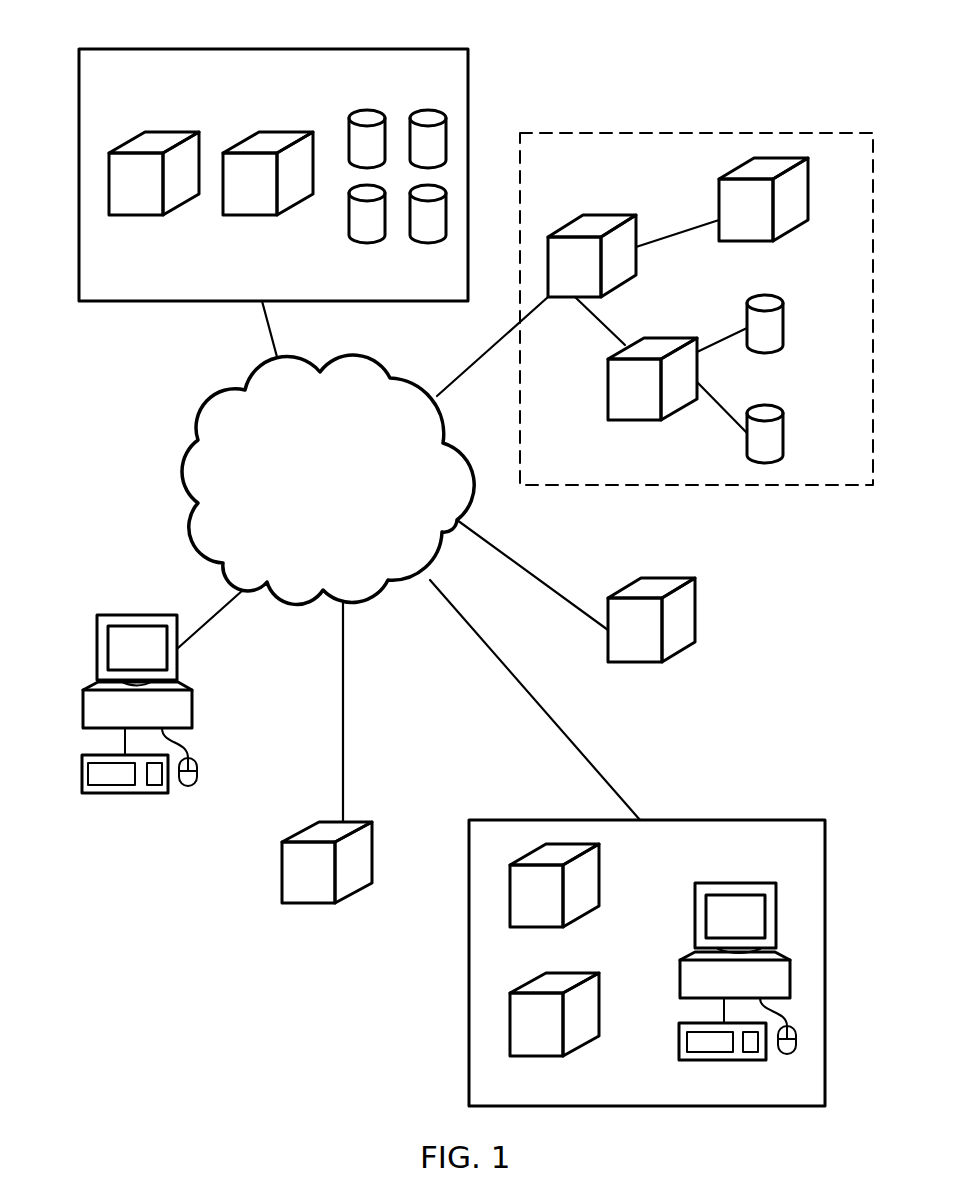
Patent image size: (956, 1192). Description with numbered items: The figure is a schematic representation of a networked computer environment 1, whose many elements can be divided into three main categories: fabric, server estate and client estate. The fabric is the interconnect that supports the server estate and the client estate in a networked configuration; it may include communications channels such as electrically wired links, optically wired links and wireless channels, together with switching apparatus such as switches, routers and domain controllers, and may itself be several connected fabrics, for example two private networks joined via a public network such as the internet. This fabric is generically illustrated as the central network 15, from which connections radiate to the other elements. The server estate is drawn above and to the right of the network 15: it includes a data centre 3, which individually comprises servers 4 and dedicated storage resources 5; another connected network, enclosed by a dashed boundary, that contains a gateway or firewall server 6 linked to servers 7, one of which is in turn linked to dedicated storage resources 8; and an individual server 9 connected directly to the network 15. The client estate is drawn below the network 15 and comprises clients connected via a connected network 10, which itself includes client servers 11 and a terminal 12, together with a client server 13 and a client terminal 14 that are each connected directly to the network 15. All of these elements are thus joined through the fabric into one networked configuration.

The networked computer environment 1 is at (662, 81).
The data centre 3 is at (297, 49).
The server 4 is at (165, 131).
The dedicated storage resource 5 is at (352, 111).
The gateway or firewall server 6 is at (600, 216).
The server 7 is at (745, 243).
The dedicated storage resource 8 is at (784, 322).
The individual server 9 is at (698, 613).
The connected network 10 is at (713, 820).
The client server 11 is at (602, 877).
The terminal 12 is at (733, 883).
The client server 13 is at (313, 904).
The client terminal 14 is at (194, 703).
The network 15 is at (181, 478).